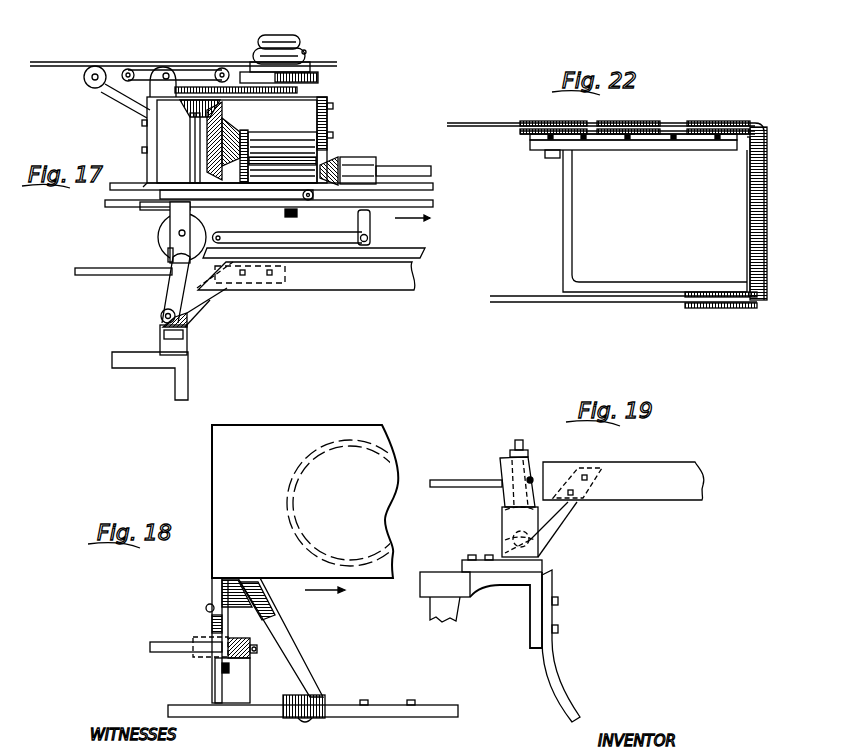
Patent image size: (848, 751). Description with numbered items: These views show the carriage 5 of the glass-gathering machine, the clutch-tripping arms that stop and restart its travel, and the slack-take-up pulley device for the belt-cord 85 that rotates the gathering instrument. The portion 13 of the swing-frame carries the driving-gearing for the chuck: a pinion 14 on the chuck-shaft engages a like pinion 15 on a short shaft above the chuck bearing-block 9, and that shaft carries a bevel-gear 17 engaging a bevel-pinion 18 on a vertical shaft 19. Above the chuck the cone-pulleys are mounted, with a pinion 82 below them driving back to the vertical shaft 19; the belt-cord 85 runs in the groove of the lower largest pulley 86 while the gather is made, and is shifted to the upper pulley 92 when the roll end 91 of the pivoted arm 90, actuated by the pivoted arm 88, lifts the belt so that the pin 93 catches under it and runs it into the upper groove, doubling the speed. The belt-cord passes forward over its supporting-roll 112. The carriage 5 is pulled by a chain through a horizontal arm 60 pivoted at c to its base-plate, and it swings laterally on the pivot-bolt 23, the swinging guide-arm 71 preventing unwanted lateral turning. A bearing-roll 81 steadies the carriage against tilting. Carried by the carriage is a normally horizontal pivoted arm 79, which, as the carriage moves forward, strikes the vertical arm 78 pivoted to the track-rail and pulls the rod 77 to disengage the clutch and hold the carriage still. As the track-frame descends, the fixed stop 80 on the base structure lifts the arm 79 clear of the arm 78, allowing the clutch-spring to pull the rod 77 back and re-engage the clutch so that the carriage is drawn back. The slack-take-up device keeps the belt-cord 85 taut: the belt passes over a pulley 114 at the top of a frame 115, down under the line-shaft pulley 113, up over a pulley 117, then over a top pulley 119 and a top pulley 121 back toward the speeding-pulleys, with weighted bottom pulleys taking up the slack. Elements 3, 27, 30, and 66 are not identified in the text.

In FIG. 17, the driving belt-cord 85 is at (183, 55).
In FIG. 22, the driving belt-cord 85 is at (605, 204).
In FIG. 17, the supporting-roll 112 is at (108, 92).
In FIG. 17, the pivoted arm 88 is at (128, 69).
In FIG. 17, the pivoted arm 90 is at (188, 72).
In FIG. 17, the roll end 91 is at (222, 68).
In FIG. 17, the upper pulley 92 is at (284, 49).
In FIG. 17, the pin 93 is at (306, 52).
In FIG. 17, the lower largest pulley 86 is at (292, 70).
In FIG. 17, the pinion 82 is at (300, 90).
In FIG. 17, the portion of the swing-frame 13 is at (150, 141).
In FIG. 17, the bevel-pinion 18 is at (190, 110).
In FIG. 17, the vertical shaft 19 is at (188, 148).
In FIG. 17, the bevel-gear 17 is at (222, 141).
In FIG. 17, the pinion 14 is at (232, 146).
In FIG. 17, the pinion 15 is at (249, 149).
In FIG. 17, the chuck bearing-block 9 is at (282, 151).
In FIG. 17, the shaft 3 is at (375, 167).
In FIG. 17, the swinging guide-arm 71 is at (263, 197).
In FIG. 17, the carriage 5 is at (269, 205).
In FIG. 18, the carriage 5 is at (312, 509).
In FIG. 17, the pivot-bolt 23 is at (283, 214).
In FIG. 17, the horizontal arm 60 is at (288, 232).
In FIG. 17, the pivot c is at (370, 237).
In FIG. 17, the pivoted arm 79 is at (168, 256).
In FIG. 18, the pivoted arm 79 is at (221, 667).
In FIG. 19, the pivoted arm 79 is at (515, 443).
In FIG. 17, the rod 77 is at (123, 282).
In FIG. 18, the rod 77 is at (189, 641).
In FIG. 19, the rod 77 is at (466, 476).
In FIG. 17, the stop 80 is at (168, 287).
In FIG. 19, the stop 80 is at (530, 462).
In FIG. 17, the arm 78 is at (193, 293).
In FIG. 18, the arm 78 is at (252, 655).
In FIG. 19, the arm 78 is at (503, 495).
In FIG. 22, the top pulley 121 is at (553, 118).
In FIG. 22, the top pulley 119 is at (628, 118).
In FIG. 22, the pulley 117 is at (718, 118).
In FIG. 22, the frame 115 is at (640, 213).
In FIG. 22, the pulley 113 is at (772, 213).
In FIG. 22, the pulley 114 is at (721, 308).
In FIG. 18, the bearing-roll 81 is at (313, 657).
In FIG. 19, the plate 27 is at (617, 509).
In FIG. 19, the block 30 is at (481, 588).
In FIG. 19, the curved bar 66 is at (525, 646).